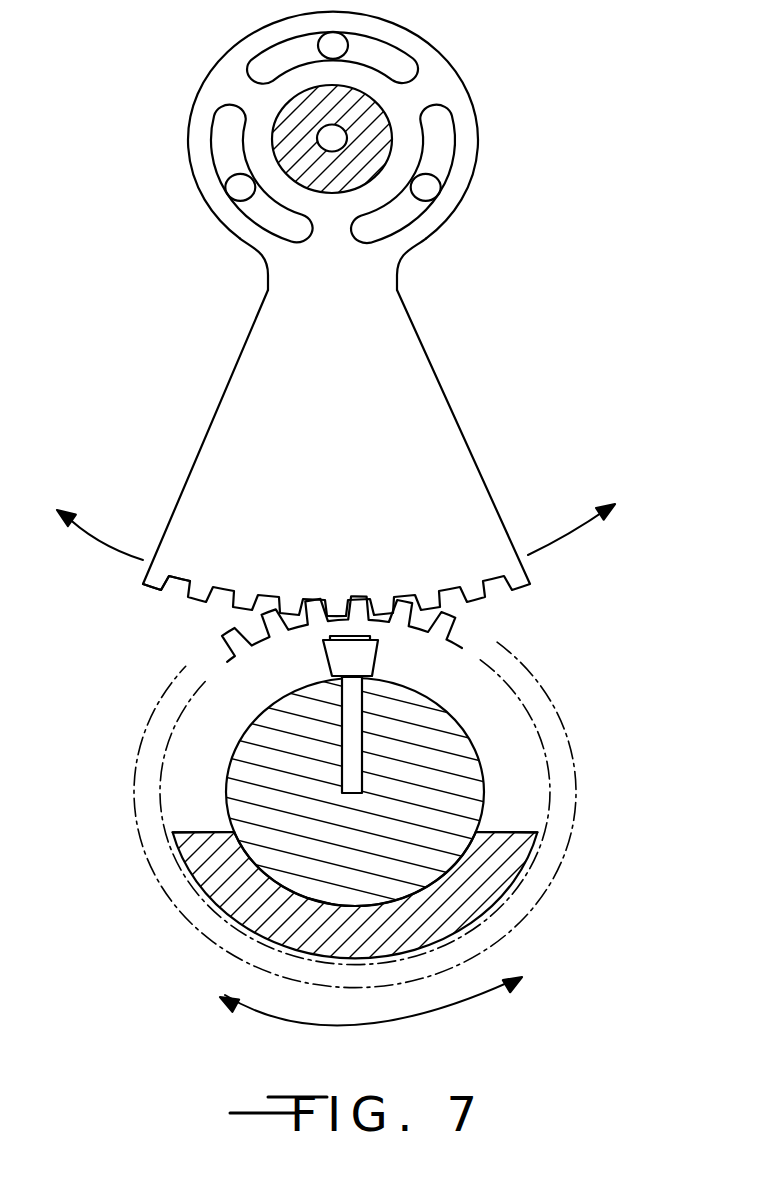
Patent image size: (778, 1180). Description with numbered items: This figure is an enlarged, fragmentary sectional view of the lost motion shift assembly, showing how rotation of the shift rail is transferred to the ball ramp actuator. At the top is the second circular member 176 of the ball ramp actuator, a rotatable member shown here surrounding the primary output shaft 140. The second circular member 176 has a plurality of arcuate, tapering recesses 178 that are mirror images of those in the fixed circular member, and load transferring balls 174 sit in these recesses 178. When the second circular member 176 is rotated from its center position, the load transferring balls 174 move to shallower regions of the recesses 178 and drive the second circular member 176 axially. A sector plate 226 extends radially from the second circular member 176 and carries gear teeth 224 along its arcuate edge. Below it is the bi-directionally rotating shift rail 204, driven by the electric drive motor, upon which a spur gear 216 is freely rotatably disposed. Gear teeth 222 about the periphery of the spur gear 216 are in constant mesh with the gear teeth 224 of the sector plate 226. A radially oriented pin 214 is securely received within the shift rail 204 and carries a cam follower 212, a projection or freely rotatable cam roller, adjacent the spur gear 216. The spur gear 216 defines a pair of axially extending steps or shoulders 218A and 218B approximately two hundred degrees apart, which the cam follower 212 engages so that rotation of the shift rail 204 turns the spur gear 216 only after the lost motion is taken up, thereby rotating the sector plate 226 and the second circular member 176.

The primary output shaft 140 is at (300, 108).
The load transferring balls 174 is at (426, 188).
The second circular member 176 is at (327, 273).
The arcuate, tapering recesses 178 is at (440, 128).
The shift rail 204 is at (427, 810).
The cam follower 212 is at (360, 658).
The radially oriented pin 214 is at (353, 715).
The spur gear 216 is at (510, 880).
The shoulder 218A is at (192, 840).
The shoulder 218B is at (522, 836).
The gear teeth 222 is at (222, 644).
The gear teeth 224 is at (198, 592).
The sector plate 226 is at (420, 482).